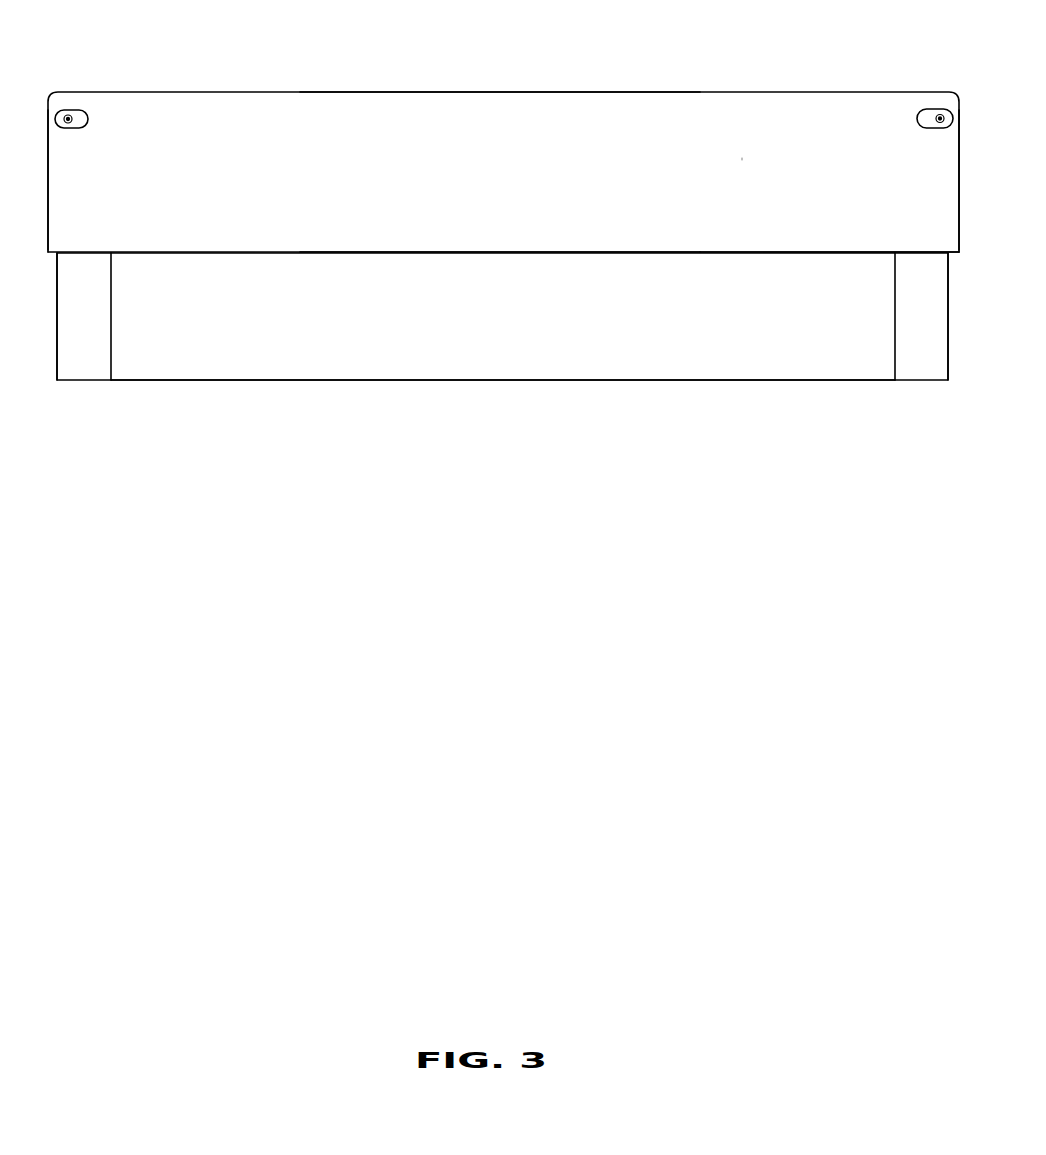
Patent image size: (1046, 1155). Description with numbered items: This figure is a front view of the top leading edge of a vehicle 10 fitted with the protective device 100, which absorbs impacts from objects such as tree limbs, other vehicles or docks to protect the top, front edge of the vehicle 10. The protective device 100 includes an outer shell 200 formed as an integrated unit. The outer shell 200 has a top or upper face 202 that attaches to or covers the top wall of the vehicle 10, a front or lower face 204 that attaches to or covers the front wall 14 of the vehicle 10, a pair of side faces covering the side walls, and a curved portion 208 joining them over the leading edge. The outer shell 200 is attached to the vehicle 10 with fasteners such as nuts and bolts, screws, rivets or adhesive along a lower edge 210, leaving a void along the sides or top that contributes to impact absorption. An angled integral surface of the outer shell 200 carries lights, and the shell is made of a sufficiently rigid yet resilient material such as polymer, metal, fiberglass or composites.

The protective device 100 is at (553, 36).
The outer shell 200 is at (233, 92).
The top face 202 is at (688, 92).
The front face 204 is at (797, 210).
The curved portion 208 is at (742, 157).
The lower edge 210 is at (480, 247).
The vehicle 10 is at (60, 378).
The front wall 14 is at (280, 336).